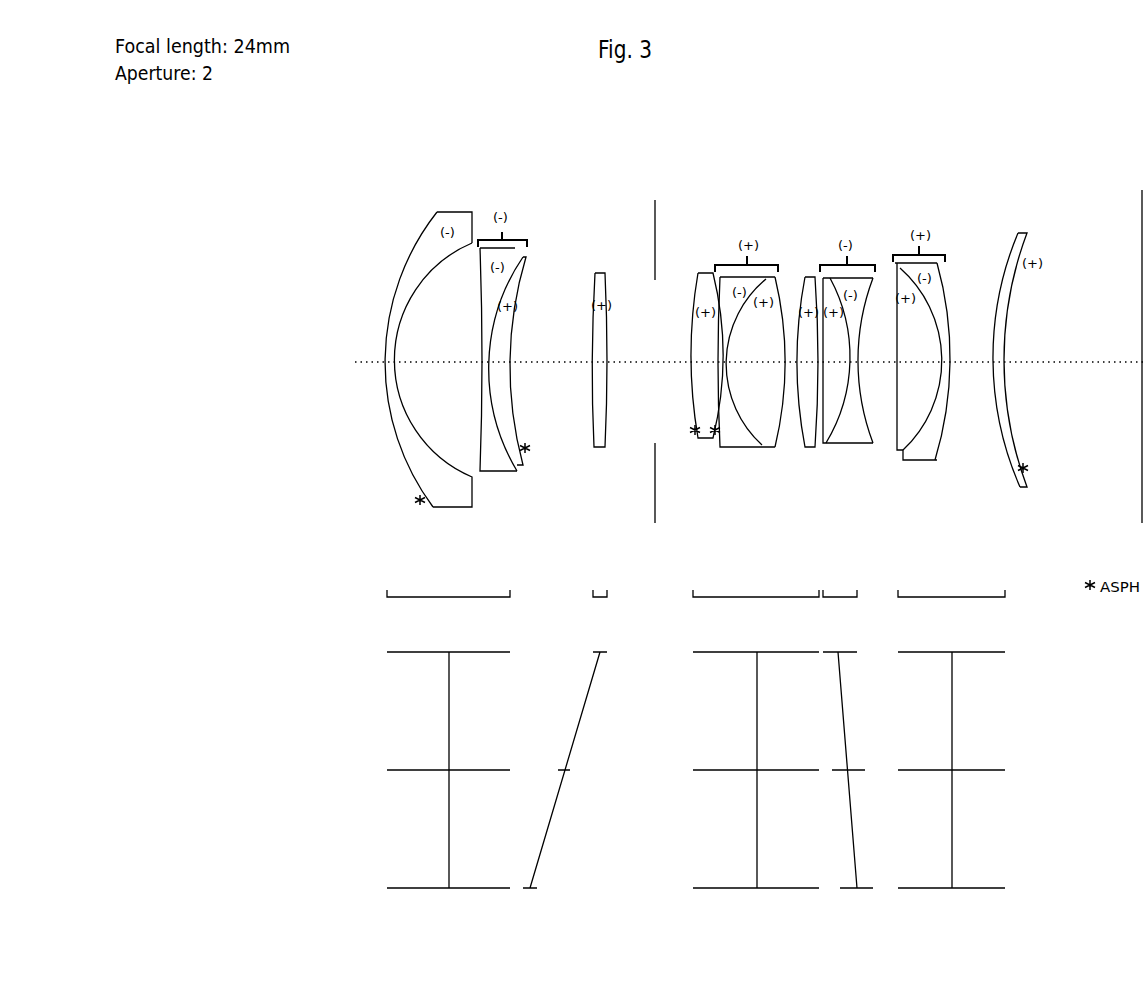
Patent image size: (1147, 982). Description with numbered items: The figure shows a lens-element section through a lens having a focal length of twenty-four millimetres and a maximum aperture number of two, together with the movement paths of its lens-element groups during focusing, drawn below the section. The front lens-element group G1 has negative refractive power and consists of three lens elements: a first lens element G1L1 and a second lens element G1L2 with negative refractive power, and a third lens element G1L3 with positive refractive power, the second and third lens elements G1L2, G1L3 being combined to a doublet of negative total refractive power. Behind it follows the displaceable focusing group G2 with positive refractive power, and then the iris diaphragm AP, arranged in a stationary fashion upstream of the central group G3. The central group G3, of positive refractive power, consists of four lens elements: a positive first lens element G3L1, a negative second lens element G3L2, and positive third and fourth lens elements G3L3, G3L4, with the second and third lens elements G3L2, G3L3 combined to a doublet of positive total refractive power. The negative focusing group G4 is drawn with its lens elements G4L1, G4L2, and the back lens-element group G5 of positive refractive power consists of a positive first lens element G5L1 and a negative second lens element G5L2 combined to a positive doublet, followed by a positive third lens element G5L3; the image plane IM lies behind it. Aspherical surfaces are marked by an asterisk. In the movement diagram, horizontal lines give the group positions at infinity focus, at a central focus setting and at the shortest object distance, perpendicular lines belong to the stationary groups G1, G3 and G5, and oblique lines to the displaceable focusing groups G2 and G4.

The first lens of first lens group G1L1 is at (428, 371).
The second lens of first lens group G1L2 is at (521, 363).
The third lens of first lens group G1L3 is at (522, 376).
The second lens-element group G2 is at (575, 580).
The first lens of third lens group G3L1 is at (700, 438).
The second lens of third lens group G3L2 is at (756, 363).
The third lens of third lens group G3L3 is at (756, 373).
The fourth lens of third lens group G3L4 is at (812, 447).
The first lens of fourth lens group G4L1 is at (843, 448).
The second lens of fourth lens group G4L2 is at (843, 448).
The first lens of fifth lens group G5L1 is at (924, 363).
The second lens of fifth lens group G5L2 is at (924, 371).
The third lens of fifth lens group G5L3 is at (1015, 372).
The iris diaphragm AP is at (655, 374).
The image plane IM is at (1140, 370).
The first lens-element group G1 is at (448, 731).
The third lens-element group G3 is at (756, 731).
The fourth lens-element group G4 is at (843, 728).
The fifth lens-element group G5 is at (951, 731).